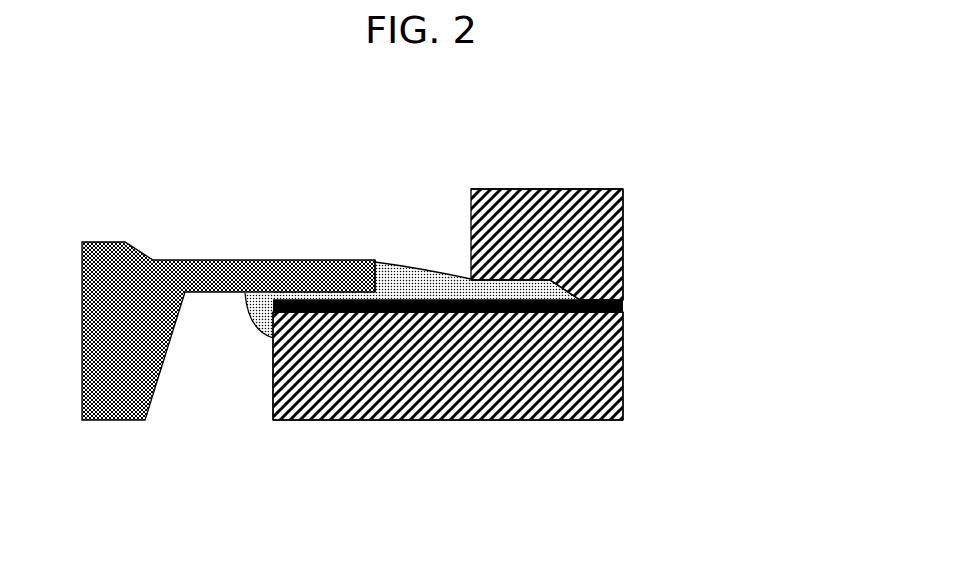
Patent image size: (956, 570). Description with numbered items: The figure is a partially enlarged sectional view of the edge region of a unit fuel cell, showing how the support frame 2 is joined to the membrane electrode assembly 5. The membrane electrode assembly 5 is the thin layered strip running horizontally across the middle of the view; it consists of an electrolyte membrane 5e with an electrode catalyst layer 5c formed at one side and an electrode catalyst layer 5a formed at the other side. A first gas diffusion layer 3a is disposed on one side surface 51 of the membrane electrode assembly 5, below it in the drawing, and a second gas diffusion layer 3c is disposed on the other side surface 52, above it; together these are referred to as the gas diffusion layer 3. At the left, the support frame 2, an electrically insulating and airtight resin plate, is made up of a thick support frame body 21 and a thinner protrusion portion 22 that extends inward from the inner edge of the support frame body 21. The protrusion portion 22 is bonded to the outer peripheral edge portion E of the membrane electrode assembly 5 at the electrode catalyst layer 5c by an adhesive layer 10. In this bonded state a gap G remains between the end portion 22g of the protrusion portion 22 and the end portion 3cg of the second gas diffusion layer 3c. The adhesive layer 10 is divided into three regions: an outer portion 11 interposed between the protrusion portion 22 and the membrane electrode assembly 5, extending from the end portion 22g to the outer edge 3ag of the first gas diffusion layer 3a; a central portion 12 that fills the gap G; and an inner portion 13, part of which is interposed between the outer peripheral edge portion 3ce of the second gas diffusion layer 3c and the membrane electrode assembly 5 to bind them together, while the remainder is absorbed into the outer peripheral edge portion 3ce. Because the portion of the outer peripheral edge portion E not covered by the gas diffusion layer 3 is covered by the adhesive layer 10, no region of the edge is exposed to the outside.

The support frame 2 is at (207, 157).
The support frame body 21 is at (150, 262).
The protrusion portion 22 is at (217, 273).
The end portion of the protrusion portion 22g is at (375, 262).
The outer peripheral edge portion E is at (398, 285).
The gap G is at (422, 238).
The gas diffusion layer 3 is at (572, 119).
The first gas diffusion layer 3a is at (585, 300).
The second gas diffusion layer 3c is at (621, 189).
The outer peripheral edge portion of the second gas diffusion layer 3ce is at (492, 189).
The end portion of the second gas diffusion layer 3cg is at (469, 248).
The outer edge of the first gas diffusion layer 3ag is at (272, 355).
The other side surface 52 is at (553, 290).
The one side surface 51 is at (532, 372).
The membrane electrode assembly 5 is at (787, 162).
The electrode catalyst layer 5c is at (624, 300).
The electrolyte membrane 5e is at (624, 306).
The electrode catalyst layer 5a is at (624, 311).
The adhesive layer 10 is at (442, 487).
The outer portion 11 is at (326, 313).
The central portion 12 is at (412, 313).
The inner portion 13 is at (447, 378).